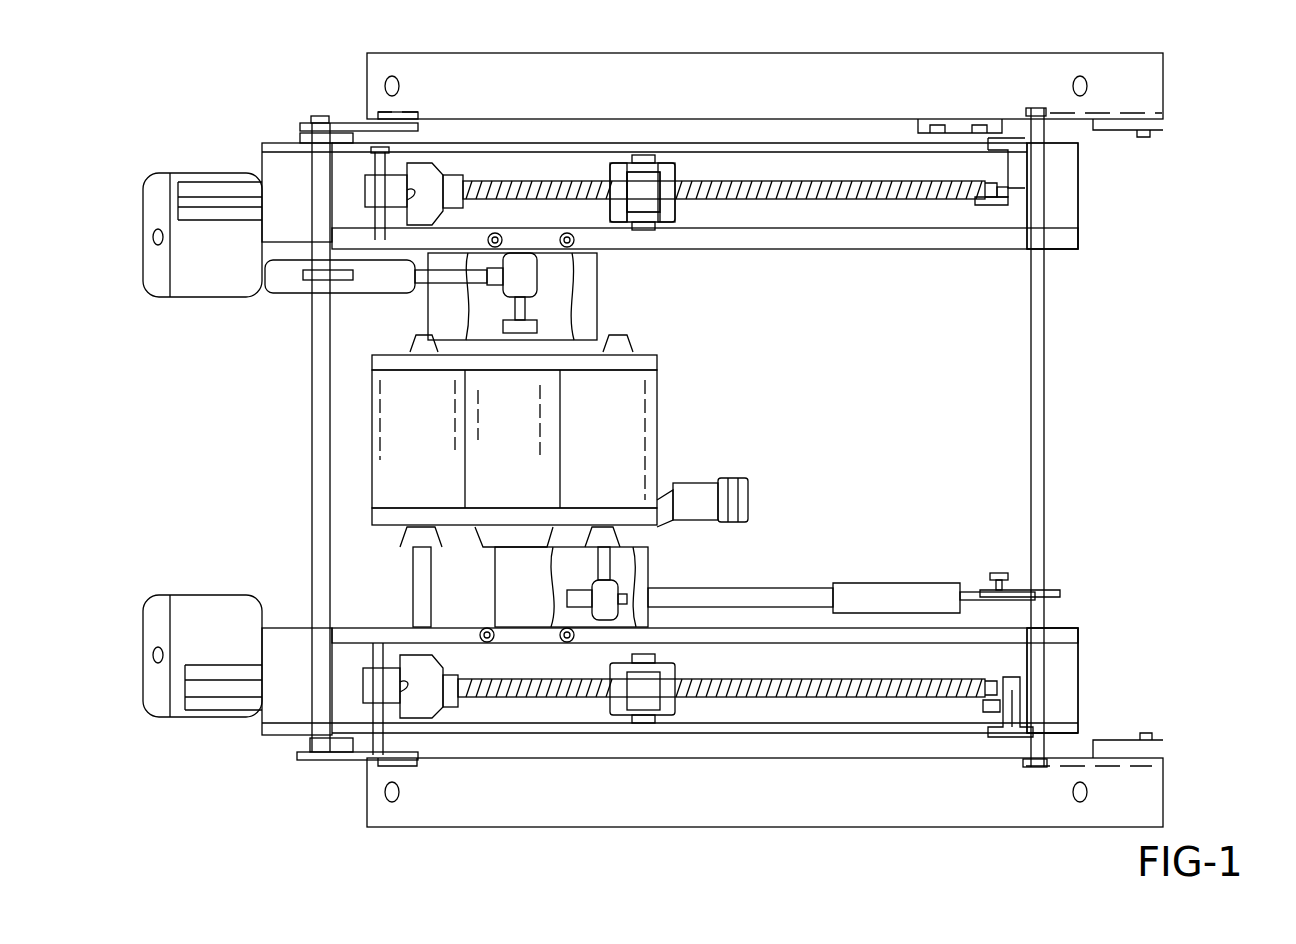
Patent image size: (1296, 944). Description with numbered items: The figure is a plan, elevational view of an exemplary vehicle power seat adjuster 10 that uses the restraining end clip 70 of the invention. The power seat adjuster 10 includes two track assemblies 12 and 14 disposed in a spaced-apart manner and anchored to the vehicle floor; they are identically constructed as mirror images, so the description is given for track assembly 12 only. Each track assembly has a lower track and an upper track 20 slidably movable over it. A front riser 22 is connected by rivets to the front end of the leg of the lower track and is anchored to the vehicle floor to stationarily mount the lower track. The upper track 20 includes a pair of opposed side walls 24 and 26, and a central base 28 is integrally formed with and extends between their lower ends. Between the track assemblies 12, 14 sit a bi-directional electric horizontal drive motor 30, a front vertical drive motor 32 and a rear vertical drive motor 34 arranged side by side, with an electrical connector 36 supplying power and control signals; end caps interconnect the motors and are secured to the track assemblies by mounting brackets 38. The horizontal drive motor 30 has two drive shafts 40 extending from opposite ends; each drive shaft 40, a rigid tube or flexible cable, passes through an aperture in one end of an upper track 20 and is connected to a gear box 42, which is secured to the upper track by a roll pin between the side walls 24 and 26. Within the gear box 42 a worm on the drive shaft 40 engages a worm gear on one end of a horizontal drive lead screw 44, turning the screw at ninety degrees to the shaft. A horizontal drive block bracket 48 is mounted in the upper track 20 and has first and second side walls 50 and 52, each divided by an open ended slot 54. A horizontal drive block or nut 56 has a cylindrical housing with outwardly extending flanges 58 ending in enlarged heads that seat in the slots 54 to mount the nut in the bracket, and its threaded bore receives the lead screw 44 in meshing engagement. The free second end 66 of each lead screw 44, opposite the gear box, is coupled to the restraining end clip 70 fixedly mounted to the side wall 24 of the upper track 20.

The power seat adjuster 10 is at (1138, 318).
The track assembly 12 is at (260, 150).
The track assembly 14 is at (252, 631).
The upper track 20 is at (1082, 165).
The front riser 22 is at (150, 185).
The side wall 24 is at (1040, 125).
The side wall 26 is at (1070, 240).
The central base 28 is at (1070, 195).
The horizontal drive motor 30 is at (390, 412).
The front vertical drive motor 32 is at (548, 400).
The rear vertical drive motor 34 is at (640, 428).
The electrical connector 36 is at (748, 490).
The mounting bracket 38 is at (588, 302).
The drive shaft 40 is at (420, 310).
The gear box 42 is at (418, 175).
The horizontal drive lead screw 44 is at (755, 185).
The horizontal drive block bracket 48 is at (628, 160).
The side wall 50 is at (668, 160).
The side wall 52 is at (668, 222).
The open ended slot 54 is at (643, 158).
The horizontal drive block 56 is at (630, 202).
The flange 58 is at (640, 158).
The second end 66 is at (980, 205).
The restraining end clip 70 is at (1000, 165).